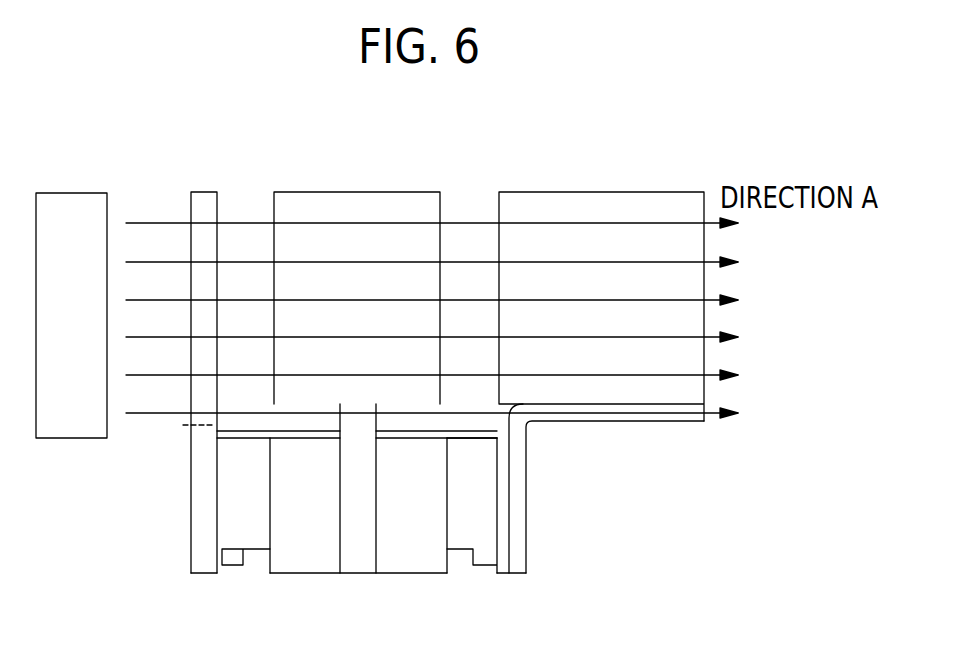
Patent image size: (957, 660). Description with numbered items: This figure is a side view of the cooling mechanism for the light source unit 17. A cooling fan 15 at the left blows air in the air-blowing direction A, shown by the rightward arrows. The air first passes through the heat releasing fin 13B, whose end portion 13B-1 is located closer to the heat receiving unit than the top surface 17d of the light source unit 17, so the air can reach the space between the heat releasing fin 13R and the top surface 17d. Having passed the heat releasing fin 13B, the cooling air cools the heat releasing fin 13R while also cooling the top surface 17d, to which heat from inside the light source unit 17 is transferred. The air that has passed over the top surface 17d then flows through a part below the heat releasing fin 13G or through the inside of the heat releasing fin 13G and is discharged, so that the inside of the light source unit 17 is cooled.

The cooling fan 15 is at (73, 202).
The heat releasing fin 13B is at (204, 202).
The heat releasing fin 13R is at (358, 202).
The heat releasing fin 13G is at (601, 202).
The end portion 13B-1 is at (203, 425).
The light source unit 17 is at (488, 500).
The top surface 17d is at (472, 438).